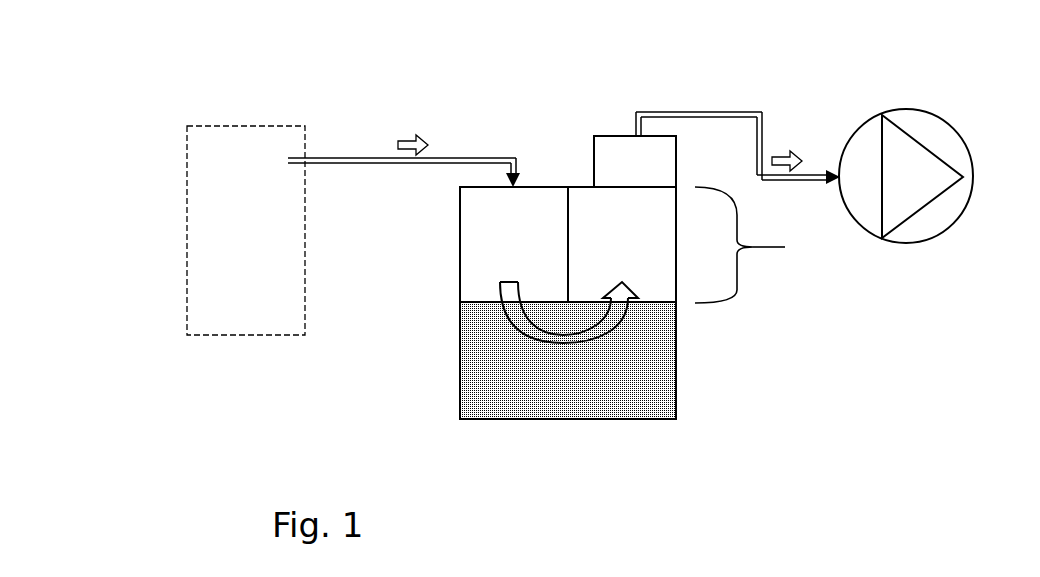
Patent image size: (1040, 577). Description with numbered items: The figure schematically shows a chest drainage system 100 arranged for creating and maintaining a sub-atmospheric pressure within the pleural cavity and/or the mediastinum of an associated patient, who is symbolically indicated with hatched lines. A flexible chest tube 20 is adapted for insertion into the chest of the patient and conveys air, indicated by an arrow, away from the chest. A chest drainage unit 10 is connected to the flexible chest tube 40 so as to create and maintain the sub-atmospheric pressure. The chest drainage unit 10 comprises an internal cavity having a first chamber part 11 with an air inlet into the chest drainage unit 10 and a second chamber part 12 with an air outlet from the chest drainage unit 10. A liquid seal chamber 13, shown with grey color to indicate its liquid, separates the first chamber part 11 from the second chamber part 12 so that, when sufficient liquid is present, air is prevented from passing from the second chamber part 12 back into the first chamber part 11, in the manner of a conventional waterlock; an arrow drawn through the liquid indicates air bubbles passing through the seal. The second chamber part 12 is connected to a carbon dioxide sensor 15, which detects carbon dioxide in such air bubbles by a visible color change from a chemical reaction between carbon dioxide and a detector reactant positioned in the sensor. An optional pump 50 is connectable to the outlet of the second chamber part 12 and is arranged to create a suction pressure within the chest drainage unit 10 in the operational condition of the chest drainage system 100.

The chest drainage system 100 is at (201, 60).
The chest drainage unit 10 is at (645, 341).
The first chamber part 11 is at (514, 244).
The second chamber part 12 is at (622, 244).
The liquid seal chamber 13 is at (568, 360).
The carbon dioxide sensor 15 is at (600, 126).
The flexible chest tube 20 is at (350, 170).
The flexible chest tube 40 is at (722, 100).
The pump 50 is at (952, 248).